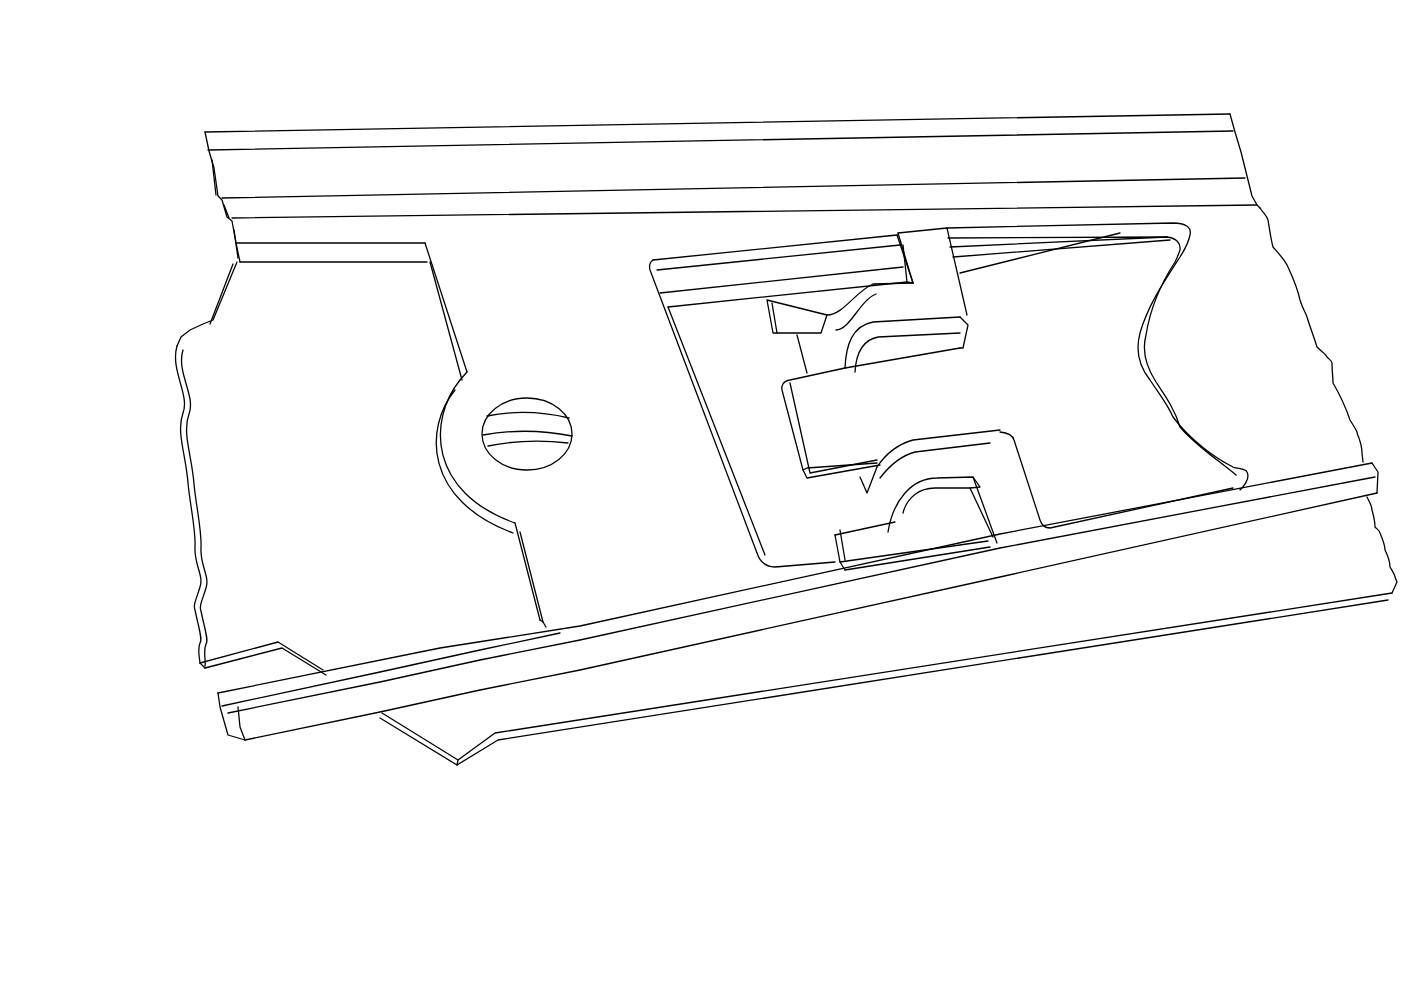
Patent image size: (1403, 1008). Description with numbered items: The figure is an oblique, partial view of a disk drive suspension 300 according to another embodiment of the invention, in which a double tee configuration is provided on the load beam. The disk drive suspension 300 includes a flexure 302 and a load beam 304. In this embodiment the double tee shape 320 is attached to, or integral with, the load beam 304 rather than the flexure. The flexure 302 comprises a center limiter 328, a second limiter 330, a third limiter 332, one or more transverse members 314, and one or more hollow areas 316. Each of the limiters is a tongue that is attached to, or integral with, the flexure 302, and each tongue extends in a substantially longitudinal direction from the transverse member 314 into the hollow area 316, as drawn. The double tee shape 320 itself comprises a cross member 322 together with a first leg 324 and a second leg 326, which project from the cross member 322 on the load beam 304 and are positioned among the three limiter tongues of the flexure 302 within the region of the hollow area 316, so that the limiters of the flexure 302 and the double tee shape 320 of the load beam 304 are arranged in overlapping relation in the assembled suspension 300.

The disk drive suspension 300 is at (200, 796).
The flexure 302 is at (553, 690).
The load beam 304 is at (487, 253).
The transverse member 314 is at (1045, 285).
The hollow area 316 is at (722, 370).
The double tee shape 320 is at (958, 298).
The cross member 322 is at (853, 490).
The first leg 324 is at (866, 313).
The second leg 326 is at (893, 482).
The center limiter 328 is at (860, 405).
The second limiter 330 is at (893, 537).
The third limiter 332 is at (800, 315).